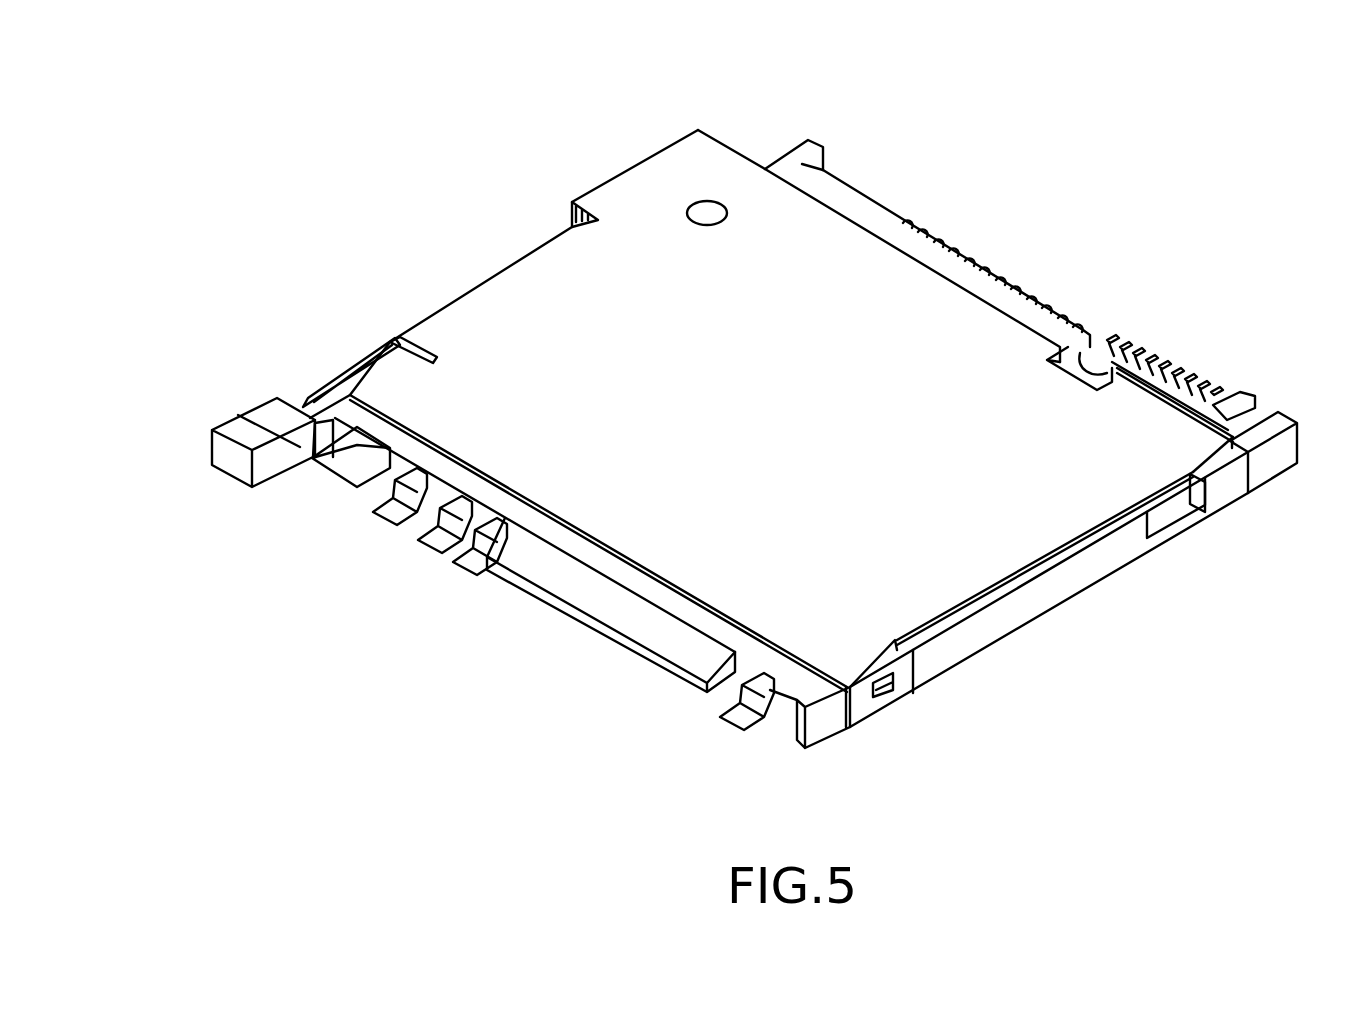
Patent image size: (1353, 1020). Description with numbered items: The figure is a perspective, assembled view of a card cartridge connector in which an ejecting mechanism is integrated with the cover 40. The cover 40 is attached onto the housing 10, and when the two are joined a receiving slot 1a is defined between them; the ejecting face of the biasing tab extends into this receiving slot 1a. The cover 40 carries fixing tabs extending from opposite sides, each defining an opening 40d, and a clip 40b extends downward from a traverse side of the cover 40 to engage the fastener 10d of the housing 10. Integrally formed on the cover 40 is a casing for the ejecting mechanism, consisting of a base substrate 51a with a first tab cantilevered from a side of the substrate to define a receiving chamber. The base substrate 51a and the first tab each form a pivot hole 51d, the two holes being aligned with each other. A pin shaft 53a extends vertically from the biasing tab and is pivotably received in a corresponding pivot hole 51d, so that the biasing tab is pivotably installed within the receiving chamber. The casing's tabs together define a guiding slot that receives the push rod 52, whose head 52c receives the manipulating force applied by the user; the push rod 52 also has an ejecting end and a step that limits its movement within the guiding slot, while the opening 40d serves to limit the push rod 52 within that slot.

The receiving slot 1a is at (572, 542).
The housing 10 is at (1140, 560).
The fastener 10d is at (882, 688).
The cover 40 is at (1067, 433).
The clip 40b is at (1228, 495).
The opening 40d is at (863, 703).
The base substrate 51a is at (665, 177).
The pivot hole 51d is at (733, 223).
The push rod 52 is at (355, 372).
The head 52c is at (235, 463).
The pin shaft 53a is at (710, 213).